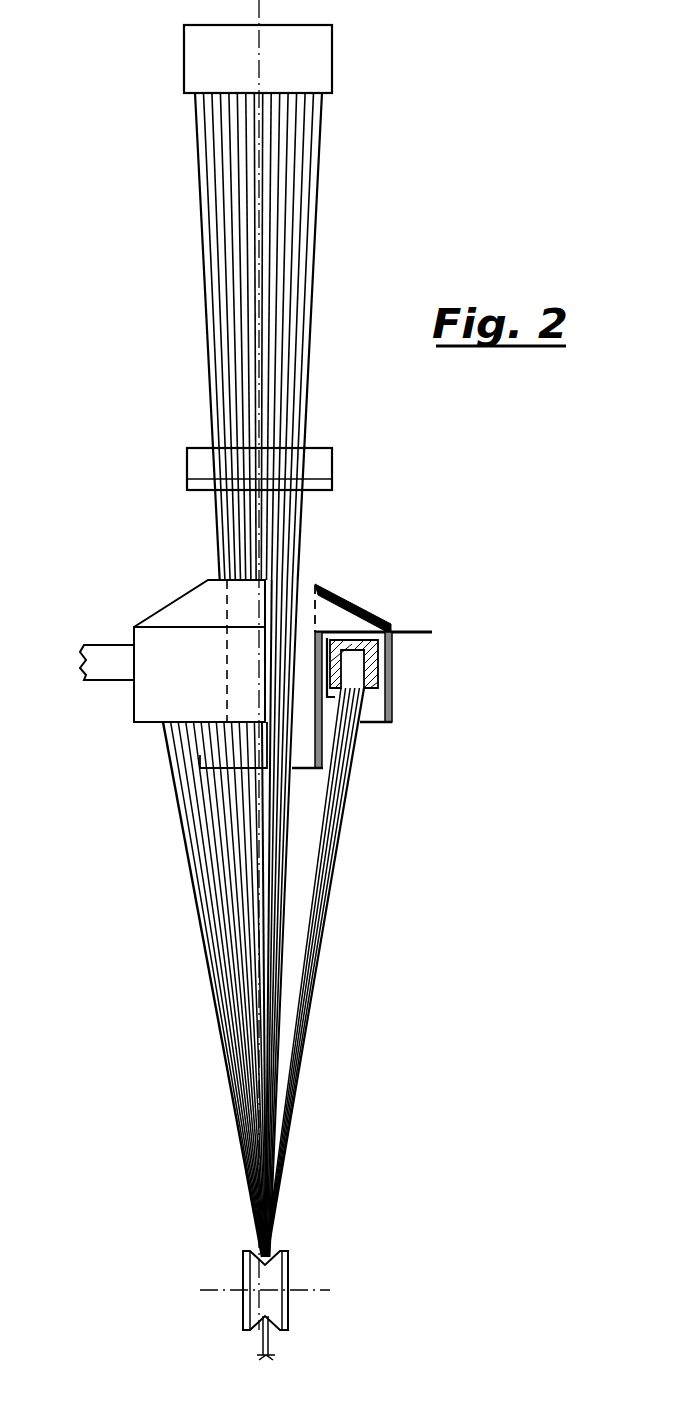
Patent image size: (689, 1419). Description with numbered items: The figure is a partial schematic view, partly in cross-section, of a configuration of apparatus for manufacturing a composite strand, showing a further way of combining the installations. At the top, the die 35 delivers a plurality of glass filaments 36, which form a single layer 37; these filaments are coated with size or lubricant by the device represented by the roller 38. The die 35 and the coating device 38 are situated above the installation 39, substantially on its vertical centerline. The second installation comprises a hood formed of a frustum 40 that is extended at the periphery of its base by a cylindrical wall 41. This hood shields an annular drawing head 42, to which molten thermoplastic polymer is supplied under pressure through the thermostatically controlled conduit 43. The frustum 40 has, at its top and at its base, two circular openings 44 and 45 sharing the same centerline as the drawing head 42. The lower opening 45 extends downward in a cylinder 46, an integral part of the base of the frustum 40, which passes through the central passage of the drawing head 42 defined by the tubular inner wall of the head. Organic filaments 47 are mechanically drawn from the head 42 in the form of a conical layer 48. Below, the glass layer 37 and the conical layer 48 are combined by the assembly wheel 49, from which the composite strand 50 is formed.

The die 35 is at (318, 47).
The glass filaments 36 is at (307, 152).
The single layer 37 is at (325, 238).
The roller 38 is at (190, 468).
The installation 39 is at (383, 598).
The frustum 40 is at (185, 605).
The cylindrical wall 41 is at (158, 708).
The annular drawing head 42 is at (375, 677).
The thermostatically controlled conduit 43 is at (108, 646).
The circular opening 44 is at (305, 588).
The circular opening 45 is at (315, 632).
The cylinder 46 is at (322, 733).
The organic filaments 47 is at (330, 860).
The conical layer 48 is at (188, 885).
The assembly wheel 49 is at (285, 1290).
The composite strand 50 is at (270, 1347).